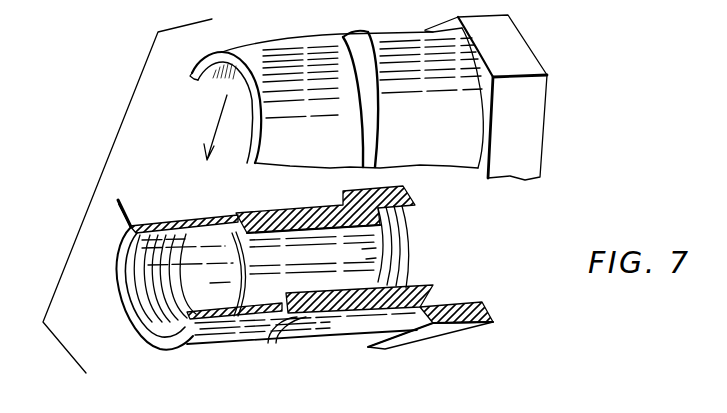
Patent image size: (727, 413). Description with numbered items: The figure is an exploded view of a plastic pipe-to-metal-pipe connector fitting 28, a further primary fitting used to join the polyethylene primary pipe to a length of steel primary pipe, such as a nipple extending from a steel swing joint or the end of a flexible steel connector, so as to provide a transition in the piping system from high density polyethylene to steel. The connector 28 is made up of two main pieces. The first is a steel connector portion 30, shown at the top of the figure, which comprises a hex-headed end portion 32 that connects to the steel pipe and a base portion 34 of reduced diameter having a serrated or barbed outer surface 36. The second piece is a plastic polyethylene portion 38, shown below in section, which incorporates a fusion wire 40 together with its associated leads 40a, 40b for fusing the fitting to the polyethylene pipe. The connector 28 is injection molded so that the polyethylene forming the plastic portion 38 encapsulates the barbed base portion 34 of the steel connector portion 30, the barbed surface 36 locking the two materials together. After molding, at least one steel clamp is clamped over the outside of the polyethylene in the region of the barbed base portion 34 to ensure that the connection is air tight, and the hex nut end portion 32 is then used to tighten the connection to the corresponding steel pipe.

The primary connector fitting 28 is at (483, 230).
The steel connector portion 30 is at (508, 53).
The hex-headed end portion 32 is at (528, 122).
The base portion 34 is at (347, 335).
The serrated or barbed outer surface 36 is at (310, 306).
The plastic portion 38 is at (254, 212).
The fusion wire 40 is at (173, 231).
The lead 40a is at (118, 203).
The lead 40b is at (122, 198).